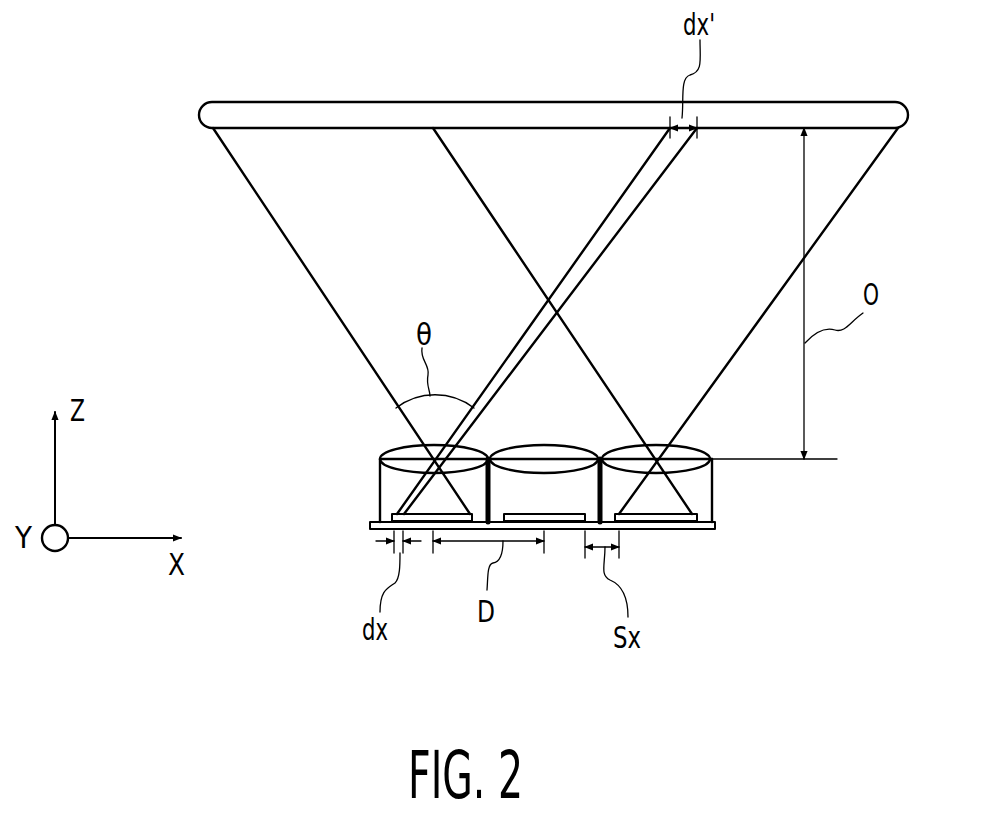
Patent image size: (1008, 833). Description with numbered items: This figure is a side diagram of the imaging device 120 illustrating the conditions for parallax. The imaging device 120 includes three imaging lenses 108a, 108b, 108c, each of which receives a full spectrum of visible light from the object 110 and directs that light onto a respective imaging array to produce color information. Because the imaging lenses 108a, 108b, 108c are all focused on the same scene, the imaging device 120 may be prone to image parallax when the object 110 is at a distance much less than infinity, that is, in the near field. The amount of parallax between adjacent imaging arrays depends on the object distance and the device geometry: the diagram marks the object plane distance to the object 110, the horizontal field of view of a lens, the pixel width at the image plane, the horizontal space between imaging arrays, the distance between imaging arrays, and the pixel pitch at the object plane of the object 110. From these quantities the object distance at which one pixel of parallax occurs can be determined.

The imaging lens 108a is at (393, 448).
The imaging lens 108b is at (543, 448).
The imaging lens 108c is at (698, 448).
The object 110 is at (758, 108).
The imaging device 120 is at (553, 471).